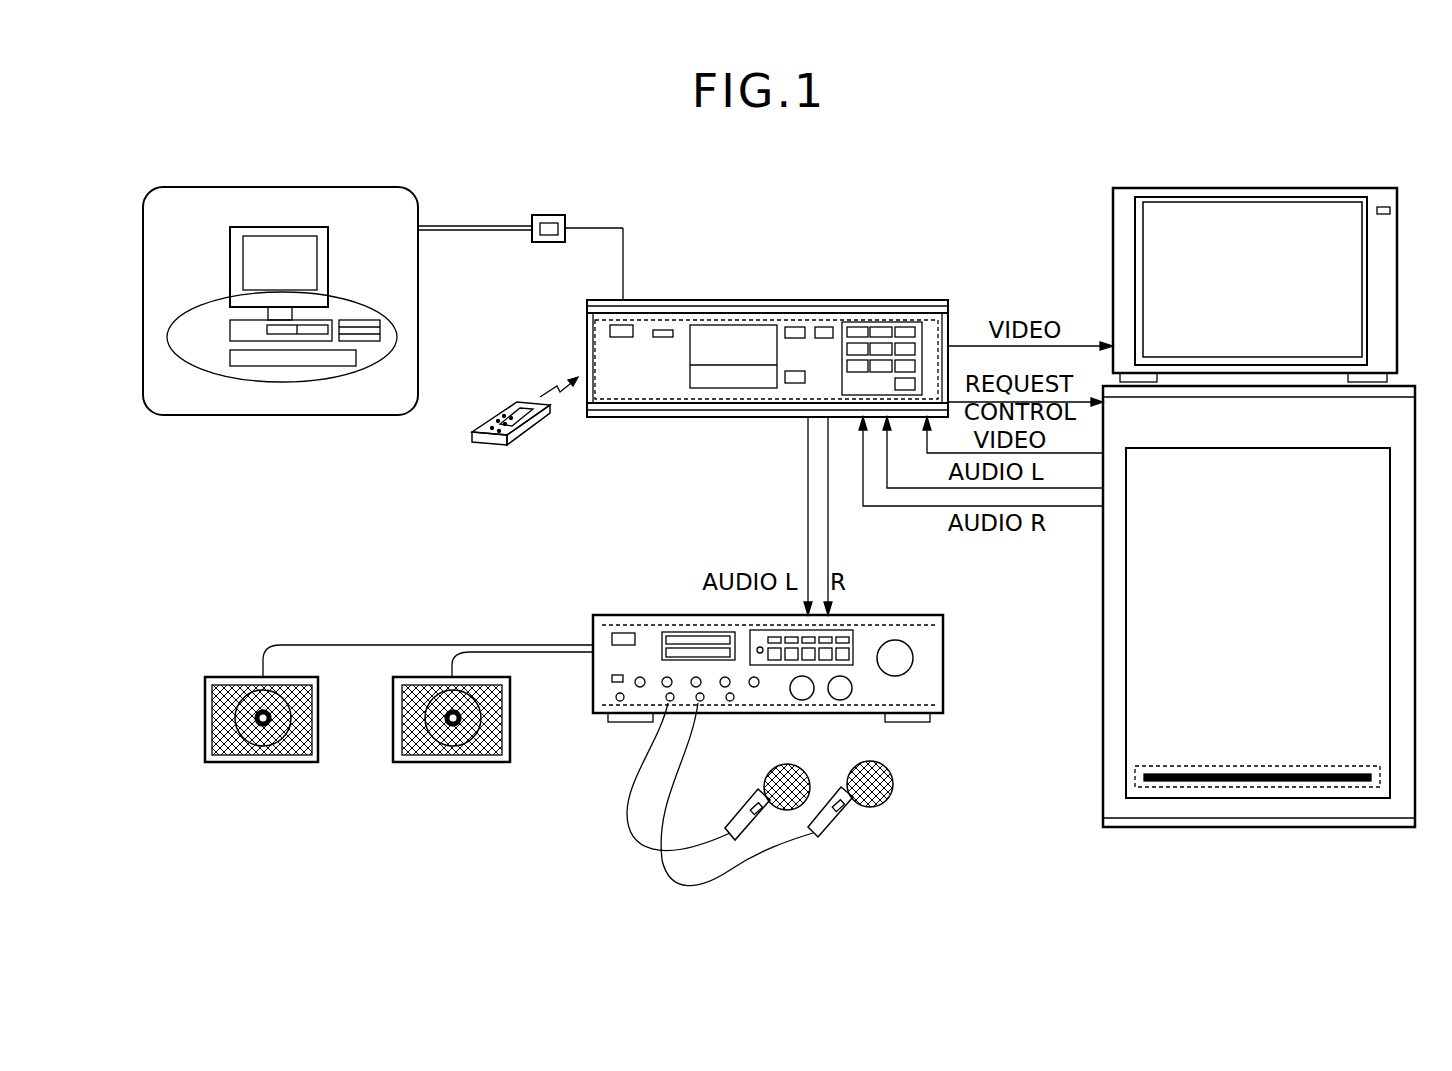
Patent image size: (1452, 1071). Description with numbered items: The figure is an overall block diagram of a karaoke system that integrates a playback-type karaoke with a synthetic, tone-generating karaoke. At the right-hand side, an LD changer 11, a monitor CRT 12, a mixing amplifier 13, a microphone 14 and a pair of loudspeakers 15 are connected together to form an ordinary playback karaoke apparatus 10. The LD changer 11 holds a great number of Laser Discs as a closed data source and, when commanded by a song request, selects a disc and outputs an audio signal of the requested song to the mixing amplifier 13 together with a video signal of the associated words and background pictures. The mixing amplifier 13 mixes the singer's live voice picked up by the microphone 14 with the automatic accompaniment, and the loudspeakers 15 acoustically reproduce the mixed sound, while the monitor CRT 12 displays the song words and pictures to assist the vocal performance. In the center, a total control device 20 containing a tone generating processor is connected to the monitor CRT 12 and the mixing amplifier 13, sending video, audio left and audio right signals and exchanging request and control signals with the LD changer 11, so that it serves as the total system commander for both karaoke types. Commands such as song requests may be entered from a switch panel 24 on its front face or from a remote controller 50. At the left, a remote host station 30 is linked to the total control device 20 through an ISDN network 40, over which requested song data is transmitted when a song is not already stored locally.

The karaoke apparatus 10 is at (950, 838).
The LD changer 11 is at (1104, 708).
The monitor CRT 12 is at (1252, 188).
The mixing amplifier 13 is at (873, 614).
The microphone 14 is at (742, 807).
The loudspeakers 15 is at (257, 762).
The total control device 20 is at (767, 302).
The switch panel 24 is at (882, 333).
The host station 30 is at (283, 415).
The ISDN network 40 is at (480, 223).
The remote controller 50 is at (488, 417).